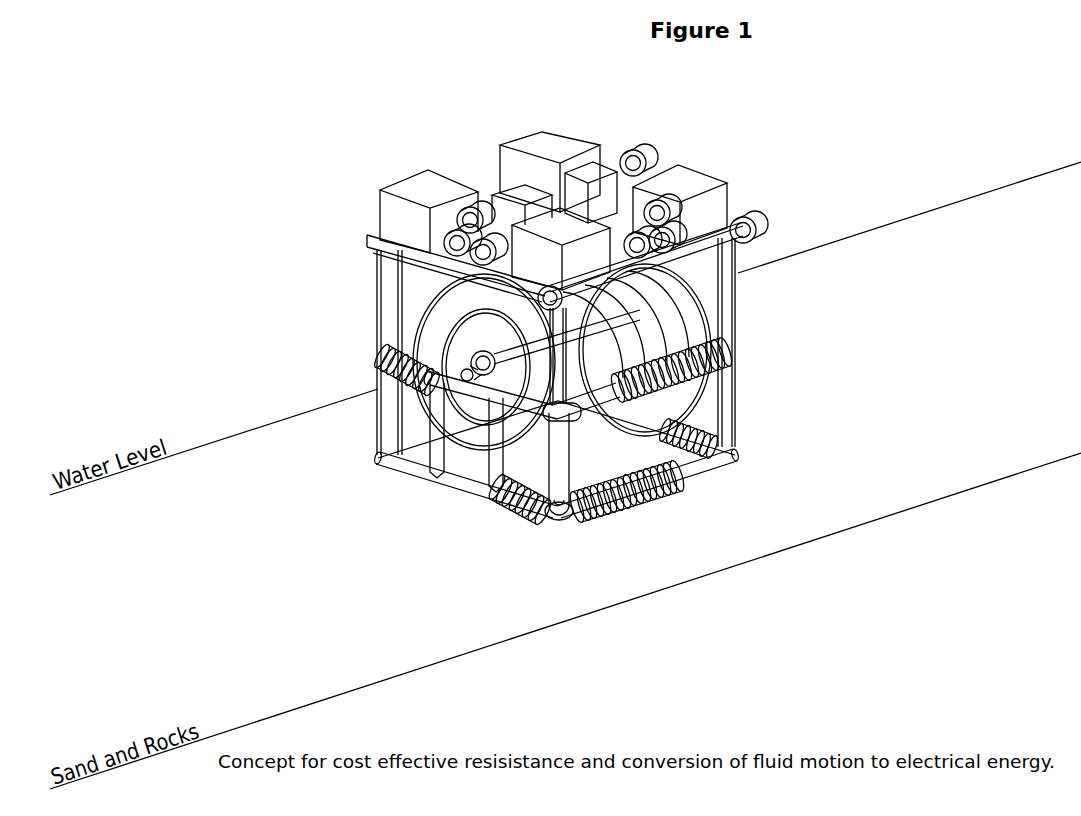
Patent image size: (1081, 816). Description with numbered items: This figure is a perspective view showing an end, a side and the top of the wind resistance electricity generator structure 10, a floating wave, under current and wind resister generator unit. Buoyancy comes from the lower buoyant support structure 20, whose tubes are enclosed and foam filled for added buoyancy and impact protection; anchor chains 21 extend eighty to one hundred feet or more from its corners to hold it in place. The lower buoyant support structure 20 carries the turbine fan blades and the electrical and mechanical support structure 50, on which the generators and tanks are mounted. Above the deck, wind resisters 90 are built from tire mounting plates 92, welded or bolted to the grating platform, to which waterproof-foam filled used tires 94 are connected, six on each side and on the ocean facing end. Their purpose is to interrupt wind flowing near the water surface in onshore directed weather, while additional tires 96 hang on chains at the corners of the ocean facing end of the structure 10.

The wind resistance electricity generator structure 10 is at (380, 160).
The lower buoyant support structure 20 is at (742, 367).
The anchor chains 21 is at (568, 518).
The electrical and mechanical support structure 50 is at (742, 160).
The wind resisters 90 is at (430, 235).
The tire mounting plates 92 is at (478, 262).
The waterproof-foam filled used tires 94 is at (440, 205).
The tires 96 is at (762, 232).